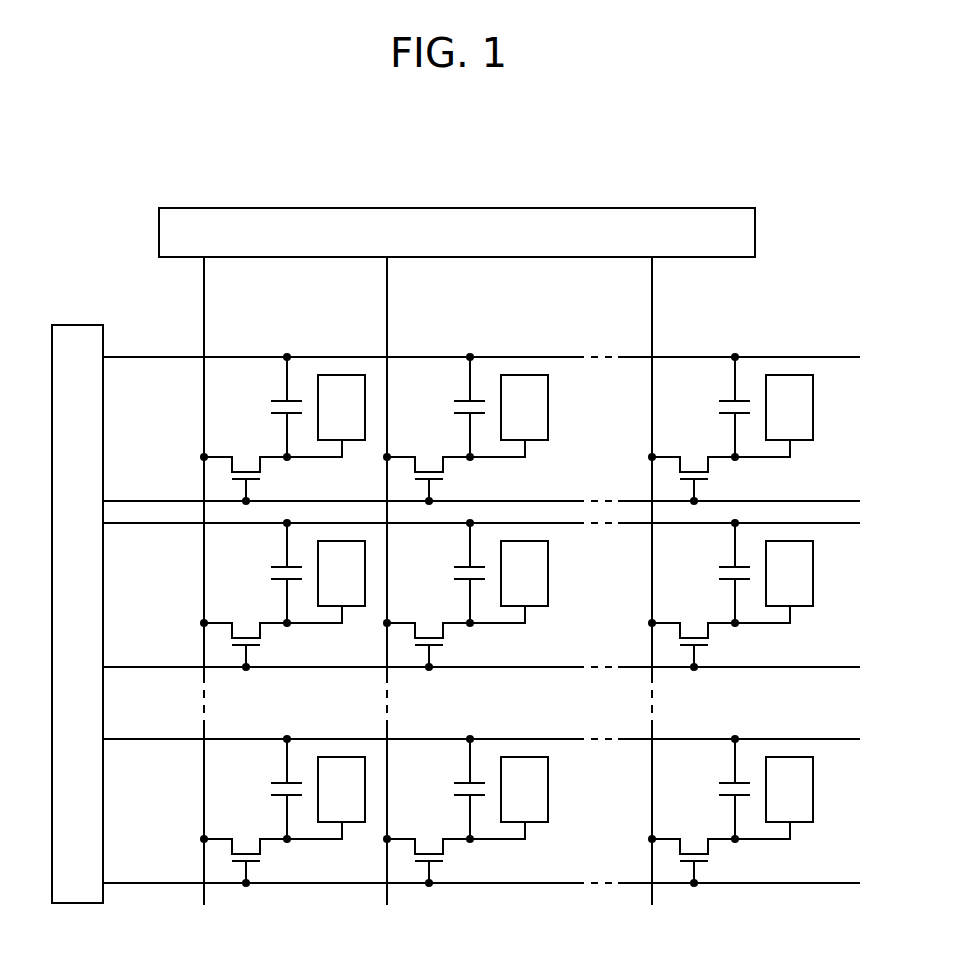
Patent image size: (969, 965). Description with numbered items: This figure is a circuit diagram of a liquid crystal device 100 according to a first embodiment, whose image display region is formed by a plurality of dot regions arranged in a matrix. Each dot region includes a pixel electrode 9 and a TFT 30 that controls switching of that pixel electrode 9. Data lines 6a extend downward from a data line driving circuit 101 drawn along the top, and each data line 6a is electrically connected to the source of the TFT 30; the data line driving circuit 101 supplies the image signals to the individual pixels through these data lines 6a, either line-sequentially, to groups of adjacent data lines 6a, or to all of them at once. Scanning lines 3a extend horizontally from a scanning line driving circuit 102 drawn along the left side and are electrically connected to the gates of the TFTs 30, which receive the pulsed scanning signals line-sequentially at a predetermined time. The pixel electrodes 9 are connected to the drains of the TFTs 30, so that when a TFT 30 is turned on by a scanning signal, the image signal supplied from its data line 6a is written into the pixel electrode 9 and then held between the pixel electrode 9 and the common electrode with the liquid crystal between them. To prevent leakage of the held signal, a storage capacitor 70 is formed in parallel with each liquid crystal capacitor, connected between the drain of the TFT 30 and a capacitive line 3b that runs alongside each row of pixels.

The liquid crystal device 100 is at (816, 312).
The data line driving circuit 101 is at (159, 236).
The scanning line driving circuit 102 is at (78, 326).
The scanning line 3a is at (190, 500).
The capacitive line 3b is at (198, 356).
The data line 6a is at (206, 350).
The pixel electrode 9 is at (342, 382).
The storage capacitor 70 is at (268, 408).
The TFT (thin film transistor) 30 is at (266, 478).